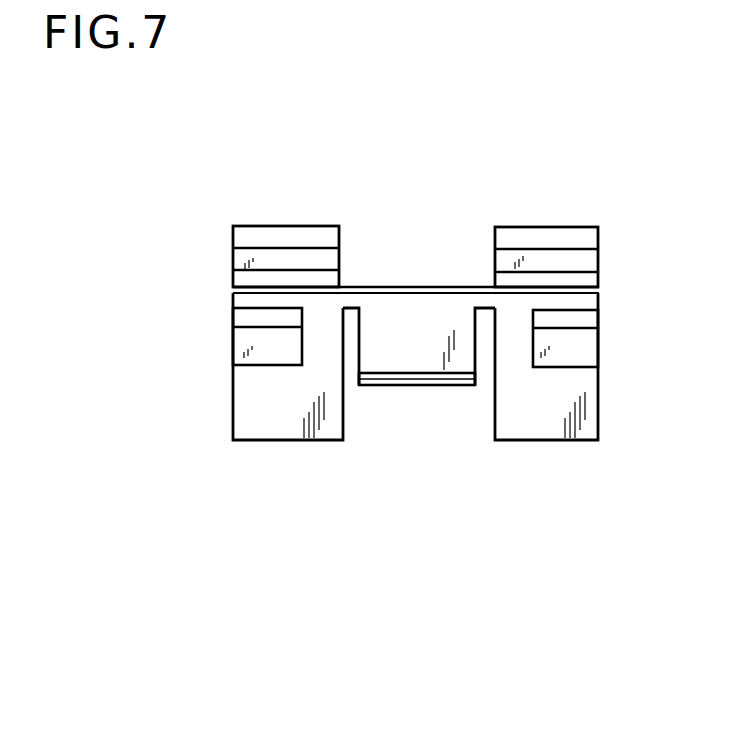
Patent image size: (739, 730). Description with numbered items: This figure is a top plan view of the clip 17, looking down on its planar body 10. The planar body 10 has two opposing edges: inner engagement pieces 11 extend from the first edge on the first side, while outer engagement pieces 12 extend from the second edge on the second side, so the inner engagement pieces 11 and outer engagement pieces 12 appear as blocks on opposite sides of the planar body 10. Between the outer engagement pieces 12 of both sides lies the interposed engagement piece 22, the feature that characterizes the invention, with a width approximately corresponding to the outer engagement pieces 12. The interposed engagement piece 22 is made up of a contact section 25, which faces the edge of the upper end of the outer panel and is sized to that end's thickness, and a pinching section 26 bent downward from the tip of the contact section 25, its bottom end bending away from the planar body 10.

The clip 17 is at (196, 264).
The inner engagement piece 11 is at (300, 227).
The planar body 10 is at (437, 287).
The outer engagement piece 12 is at (280, 423).
The interposed engagement piece 22 is at (495, 488).
The contact section 25 is at (384, 358).
The pinching section 26 is at (440, 385).